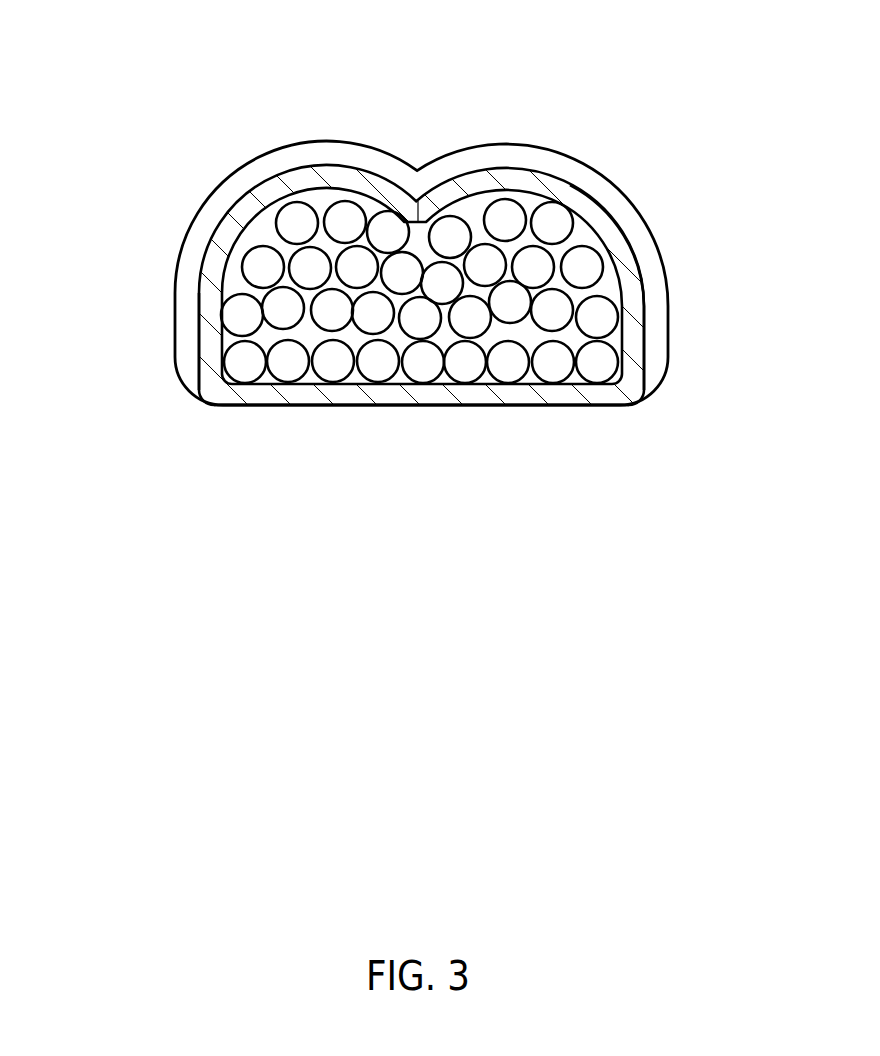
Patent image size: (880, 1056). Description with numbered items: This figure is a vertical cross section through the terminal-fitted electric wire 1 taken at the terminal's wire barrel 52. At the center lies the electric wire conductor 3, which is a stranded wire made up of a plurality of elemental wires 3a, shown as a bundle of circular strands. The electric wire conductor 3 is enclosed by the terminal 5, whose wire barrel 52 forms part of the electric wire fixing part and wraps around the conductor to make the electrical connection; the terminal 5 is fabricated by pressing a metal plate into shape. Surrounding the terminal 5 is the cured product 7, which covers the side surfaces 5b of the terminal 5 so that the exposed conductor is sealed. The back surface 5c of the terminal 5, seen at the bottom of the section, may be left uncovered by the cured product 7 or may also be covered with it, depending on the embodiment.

The terminal-fitted electric wire 1 is at (160, 110).
The cured product 7 is at (337, 143).
The terminal 5 is at (210, 263).
The wire barrel 52 is at (640, 270).
The side surfaces 5b is at (198, 340).
The back surface 5c is at (592, 406).
The electric wire conductor 3 is at (577, 513).
The elemental wires 3a is at (323, 320).